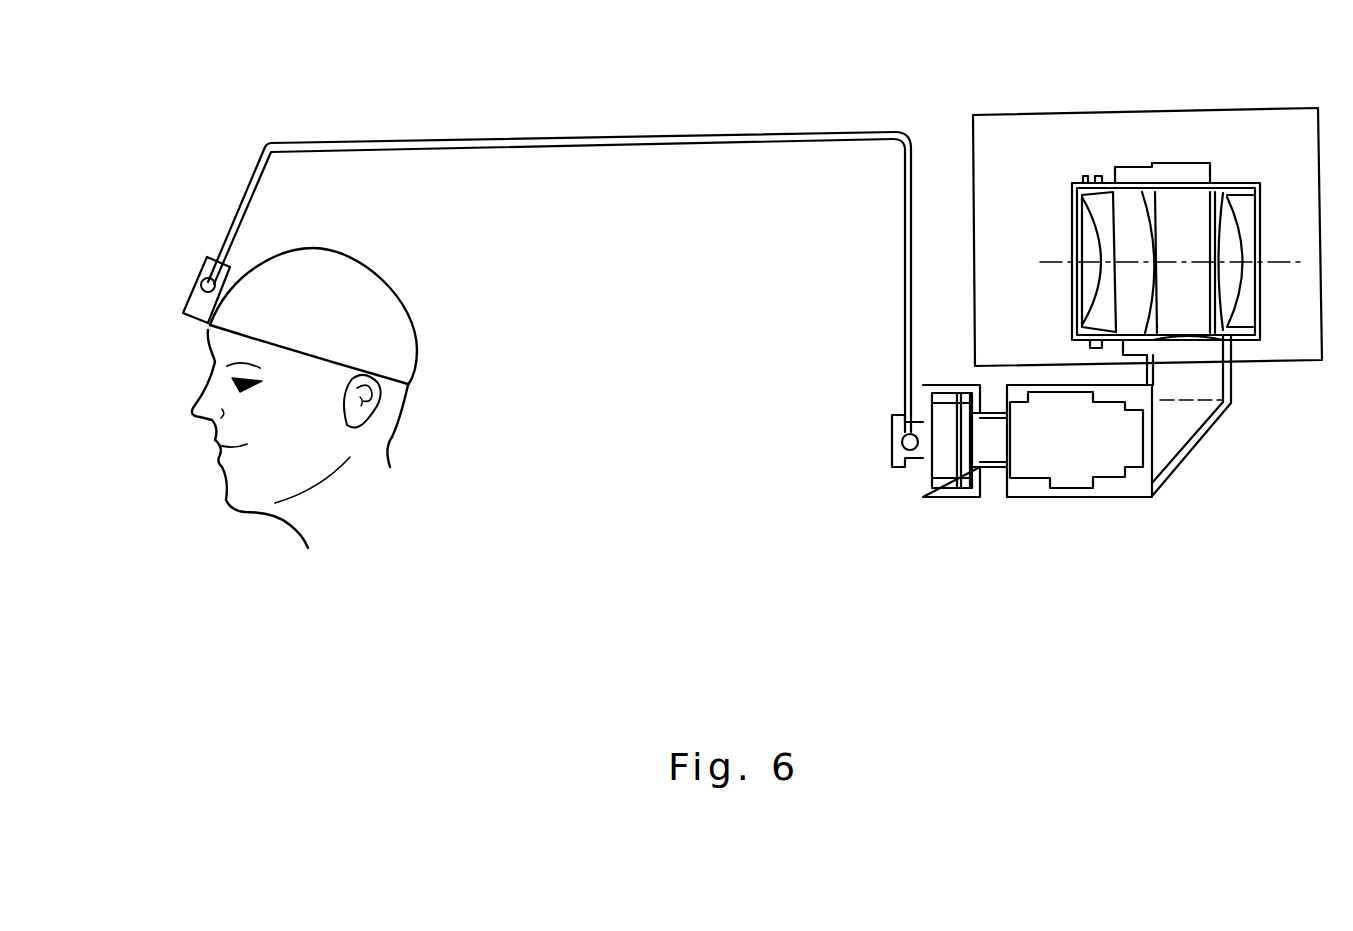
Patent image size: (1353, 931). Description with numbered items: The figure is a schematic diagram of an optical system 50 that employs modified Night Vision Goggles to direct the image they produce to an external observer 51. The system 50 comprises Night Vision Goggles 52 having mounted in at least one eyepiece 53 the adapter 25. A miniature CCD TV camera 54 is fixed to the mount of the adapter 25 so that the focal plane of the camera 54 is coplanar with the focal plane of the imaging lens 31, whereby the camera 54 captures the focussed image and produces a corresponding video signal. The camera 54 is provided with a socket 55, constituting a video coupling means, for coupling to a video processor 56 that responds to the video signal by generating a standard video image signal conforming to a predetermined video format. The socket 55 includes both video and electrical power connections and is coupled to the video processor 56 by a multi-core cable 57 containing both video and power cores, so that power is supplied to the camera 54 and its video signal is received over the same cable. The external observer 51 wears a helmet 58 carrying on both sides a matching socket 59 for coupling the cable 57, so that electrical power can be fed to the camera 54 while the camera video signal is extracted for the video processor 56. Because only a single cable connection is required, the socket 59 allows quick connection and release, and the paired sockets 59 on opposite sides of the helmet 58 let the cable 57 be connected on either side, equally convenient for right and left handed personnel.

The adapter 25 is at (1198, 460).
The imaging lens 31 is at (1070, 497).
The optical system 50 is at (728, 543).
The external observer 51 is at (373, 512).
The Night Vision Goggles 52 is at (1125, 112).
The eyepiece 53 is at (1072, 229).
The miniature CCD TV camera 54 is at (947, 497).
The socket 55 is at (902, 442).
The video processor 56 is at (192, 300).
The multi-core cable 57 is at (265, 145).
The helmet 58 is at (410, 316).
The matching socket 59 is at (204, 280).